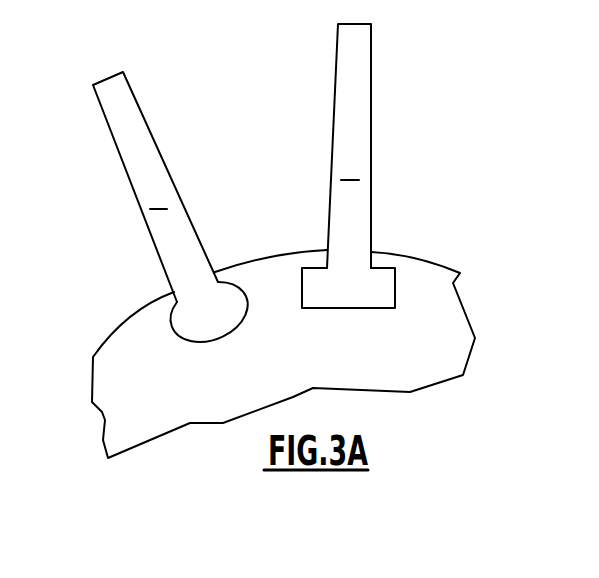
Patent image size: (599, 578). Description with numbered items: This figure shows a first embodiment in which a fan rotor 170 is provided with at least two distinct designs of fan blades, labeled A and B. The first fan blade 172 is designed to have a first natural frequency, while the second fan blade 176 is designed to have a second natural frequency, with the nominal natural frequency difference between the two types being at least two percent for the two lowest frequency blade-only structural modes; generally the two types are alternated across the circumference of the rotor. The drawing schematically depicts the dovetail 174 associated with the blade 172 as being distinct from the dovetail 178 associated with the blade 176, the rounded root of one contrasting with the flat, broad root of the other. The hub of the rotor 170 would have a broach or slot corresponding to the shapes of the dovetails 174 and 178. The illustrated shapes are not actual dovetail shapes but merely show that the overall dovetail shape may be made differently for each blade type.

The fan rotor 170 is at (110, 400).
The fan blade 172 is at (193, 238).
The dovetail 174 is at (193, 327).
The fan blade 176 is at (360, 228).
The dovetail 178 is at (355, 298).